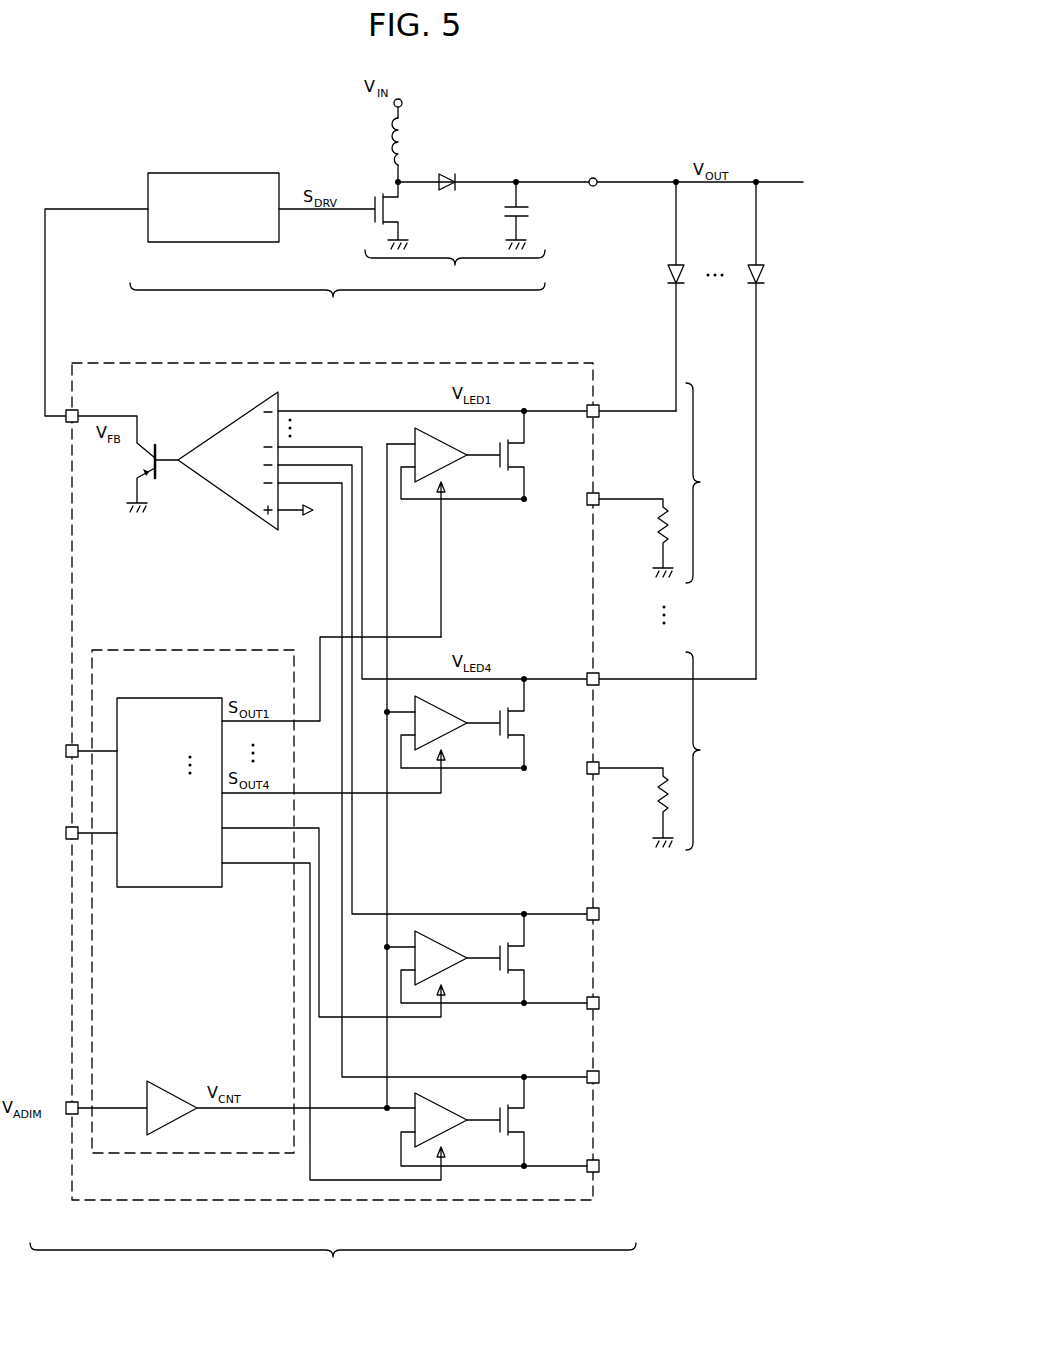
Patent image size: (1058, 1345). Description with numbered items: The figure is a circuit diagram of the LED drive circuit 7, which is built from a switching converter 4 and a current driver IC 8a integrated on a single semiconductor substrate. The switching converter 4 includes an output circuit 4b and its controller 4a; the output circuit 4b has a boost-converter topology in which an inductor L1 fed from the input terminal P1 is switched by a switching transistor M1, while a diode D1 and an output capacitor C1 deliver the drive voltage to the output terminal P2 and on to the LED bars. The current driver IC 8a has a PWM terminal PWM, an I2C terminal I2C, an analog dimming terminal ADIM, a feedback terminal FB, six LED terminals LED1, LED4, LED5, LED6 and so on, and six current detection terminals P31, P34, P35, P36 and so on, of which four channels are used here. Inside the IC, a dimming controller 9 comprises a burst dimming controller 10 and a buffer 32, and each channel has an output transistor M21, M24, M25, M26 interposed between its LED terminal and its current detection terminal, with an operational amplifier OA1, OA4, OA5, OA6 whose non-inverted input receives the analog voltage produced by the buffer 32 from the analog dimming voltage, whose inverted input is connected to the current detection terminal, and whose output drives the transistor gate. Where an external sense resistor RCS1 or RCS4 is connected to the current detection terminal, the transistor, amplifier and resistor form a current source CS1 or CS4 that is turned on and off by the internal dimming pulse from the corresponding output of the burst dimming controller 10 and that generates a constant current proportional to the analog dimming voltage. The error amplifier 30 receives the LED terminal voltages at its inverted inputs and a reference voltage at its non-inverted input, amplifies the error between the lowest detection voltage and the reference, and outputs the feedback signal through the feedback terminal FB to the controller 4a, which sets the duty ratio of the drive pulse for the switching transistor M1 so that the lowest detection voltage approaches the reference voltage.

The input terminal P1 is at (404, 98).
The inductor L1 is at (404, 142).
The diode D1 is at (448, 167).
The switching transistor M1 is at (404, 213).
The output capacitor C1 is at (501, 217).
The output terminal P2 is at (593, 178).
The controller 4a is at (213, 242).
The output circuit 4b is at (455, 268).
The switching converter 4 is at (337, 302).
The feedback terminal FB is at (66, 424).
The error amplifier 30 is at (335, 538).
The current driver IC 8a is at (392, 1200).
The LED drive circuit 7 is at (333, 1264).
The dimming controller 9 is at (125, 650).
The burst dimming controller 10 is at (168, 698).
The buffer 32 is at (165, 1081).
The operational amplifier OA1 is at (430, 437).
The output transistor M21 is at (527, 459).
The current detection terminal P31 is at (599, 497).
The sense resistor RCS1 is at (646, 522).
The current source CS1 is at (712, 483).
The LED terminal LED1 is at (599, 409).
The operational amplifier OA4 is at (430, 705).
The output transistor M24 is at (527, 727).
The current detection terminal P34 is at (599, 766).
The sense resistor RCS4 is at (646, 792).
The current source CS4 is at (712, 751).
The LED terminal LED4 is at (599, 677).
The operational amplifier OA5 is at (430, 940).
The output transistor M25 is at (527, 962).
The current detection terminal P35 is at (599, 1001).
The LED terminal LED5 is at (599, 912).
The operational amplifier OA6 is at (430, 1102).
The output transistor M26 is at (527, 1124).
The current detection terminal P36 is at (599, 1164).
The LED terminal LED6 is at (599, 1075).
The PWM terminal PWM is at (66, 745).
The I2C terminal I2C is at (66, 840).
The analog dimming terminal ADIM is at (66, 1102).